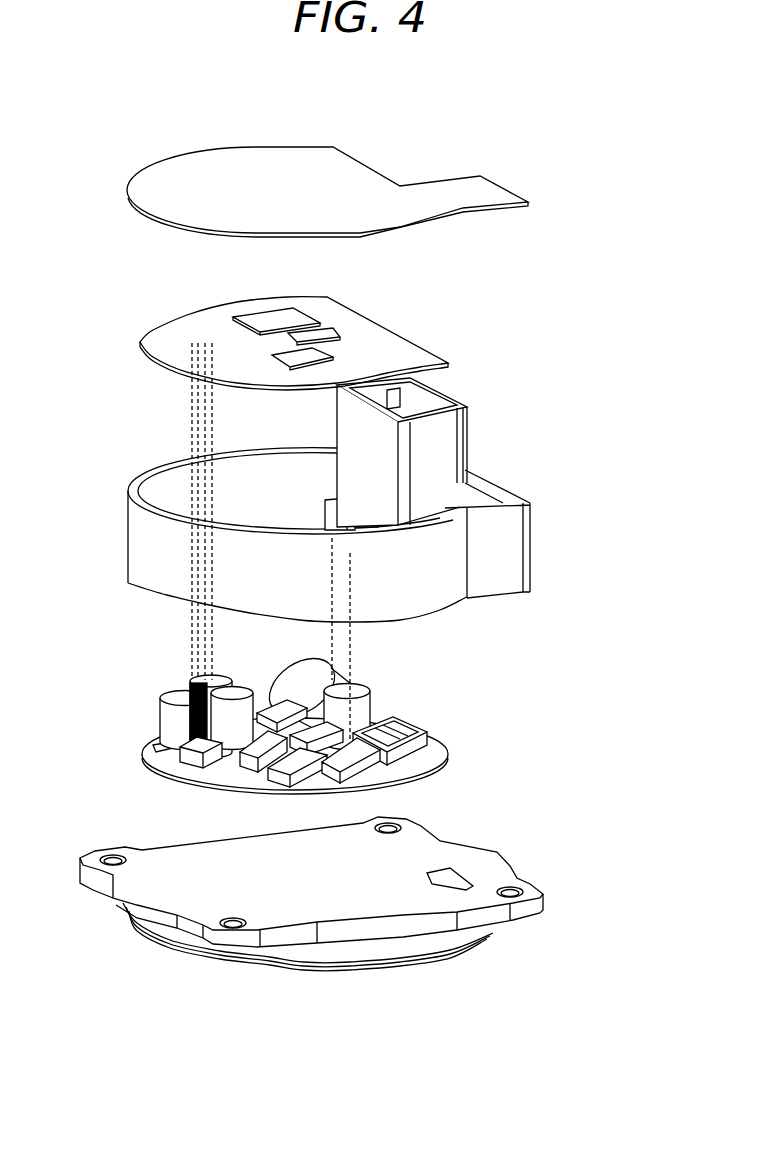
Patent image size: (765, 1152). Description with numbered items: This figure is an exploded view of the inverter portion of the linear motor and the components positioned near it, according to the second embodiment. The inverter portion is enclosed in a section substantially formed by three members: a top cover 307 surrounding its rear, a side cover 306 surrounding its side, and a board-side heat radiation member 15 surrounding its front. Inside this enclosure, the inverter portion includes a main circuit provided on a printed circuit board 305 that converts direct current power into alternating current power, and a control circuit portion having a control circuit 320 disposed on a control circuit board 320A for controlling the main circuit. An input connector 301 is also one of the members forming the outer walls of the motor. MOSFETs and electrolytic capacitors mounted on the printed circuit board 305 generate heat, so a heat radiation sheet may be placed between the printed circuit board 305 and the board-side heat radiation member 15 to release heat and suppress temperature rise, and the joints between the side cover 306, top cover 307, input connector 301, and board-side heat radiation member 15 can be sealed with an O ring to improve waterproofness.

The top cover 307 is at (327, 175).
The control circuit 320 is at (400, 323).
The control circuit board 320A is at (390, 350).
The input connector 301 is at (467, 440).
The side cover 306 is at (425, 587).
The printed circuit board 305 is at (427, 780).
The board-side heat radiation member 15 is at (393, 927).